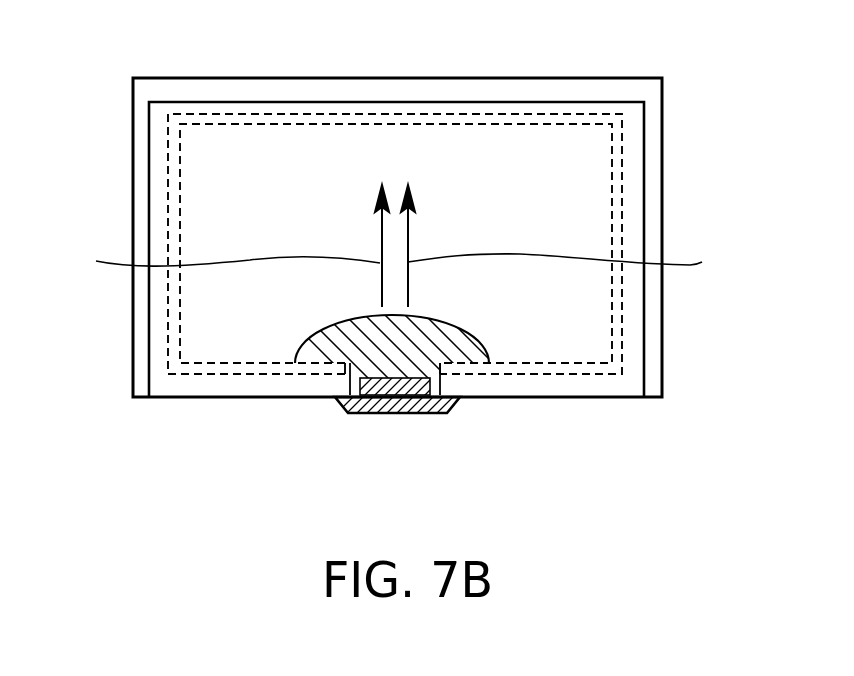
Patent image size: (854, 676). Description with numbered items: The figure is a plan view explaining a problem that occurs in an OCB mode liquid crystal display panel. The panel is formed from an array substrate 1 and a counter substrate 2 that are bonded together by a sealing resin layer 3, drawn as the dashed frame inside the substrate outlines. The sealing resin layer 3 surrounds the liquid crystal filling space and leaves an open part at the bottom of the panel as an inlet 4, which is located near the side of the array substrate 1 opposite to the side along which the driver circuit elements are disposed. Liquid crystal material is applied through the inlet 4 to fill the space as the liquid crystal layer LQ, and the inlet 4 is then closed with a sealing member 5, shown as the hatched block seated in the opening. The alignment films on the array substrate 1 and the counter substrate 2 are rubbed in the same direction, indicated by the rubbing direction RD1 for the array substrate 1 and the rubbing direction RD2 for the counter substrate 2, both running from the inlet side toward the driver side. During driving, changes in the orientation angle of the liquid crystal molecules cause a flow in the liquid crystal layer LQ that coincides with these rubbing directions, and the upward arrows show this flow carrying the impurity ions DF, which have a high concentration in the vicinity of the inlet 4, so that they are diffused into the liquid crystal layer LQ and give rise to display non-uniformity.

The array substrate 1 is at (663, 105).
The counter substrate 2 is at (645, 165).
The sealing resin layer 3 is at (623, 342).
The liquid crystal layer LQ is at (540, 143).
The rubbing direction of the alignment film on the array substrate RD1 is at (213, 262).
The rubbing direction of the alignment film on the counter substrate RD2 is at (582, 262).
The impurity ions DF is at (476, 350).
The sealing member 5 is at (408, 415).
The inlet 4 is at (366, 422).